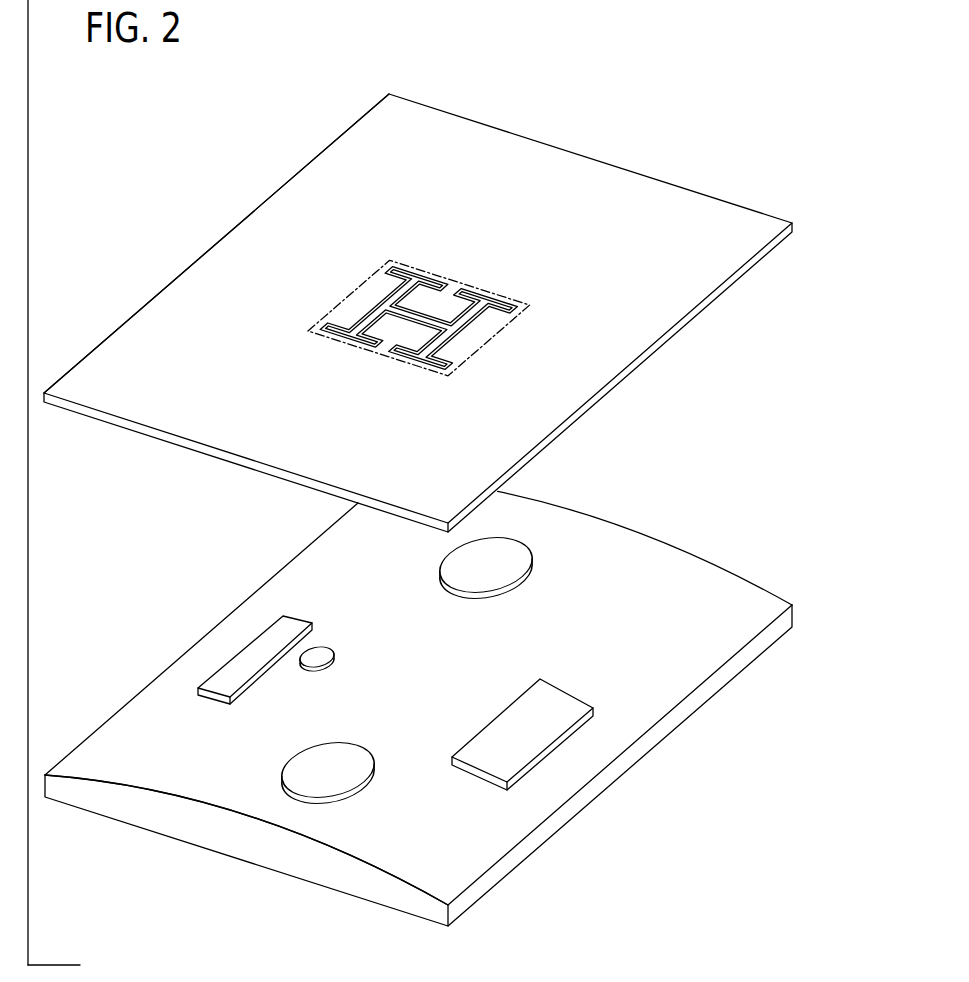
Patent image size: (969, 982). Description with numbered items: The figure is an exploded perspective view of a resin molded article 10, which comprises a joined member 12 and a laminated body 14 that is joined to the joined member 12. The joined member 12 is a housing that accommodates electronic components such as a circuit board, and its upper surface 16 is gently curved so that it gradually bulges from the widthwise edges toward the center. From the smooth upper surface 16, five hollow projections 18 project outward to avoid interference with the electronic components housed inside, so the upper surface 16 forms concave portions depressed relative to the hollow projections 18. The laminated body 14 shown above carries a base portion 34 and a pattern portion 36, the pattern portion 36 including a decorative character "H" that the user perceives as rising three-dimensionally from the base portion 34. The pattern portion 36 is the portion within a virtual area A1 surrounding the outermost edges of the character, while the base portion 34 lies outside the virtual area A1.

The resin molded article 10 is at (684, 81).
The joined member 12 is at (535, 848).
The laminated body 14 is at (551, 168).
The upper surface 16 is at (295, 595).
The hollow projections 18 is at (515, 560).
The base portion 34 is at (235, 250).
The pattern portion 36 is at (408, 282).
The virtual area A1 is at (357, 288).